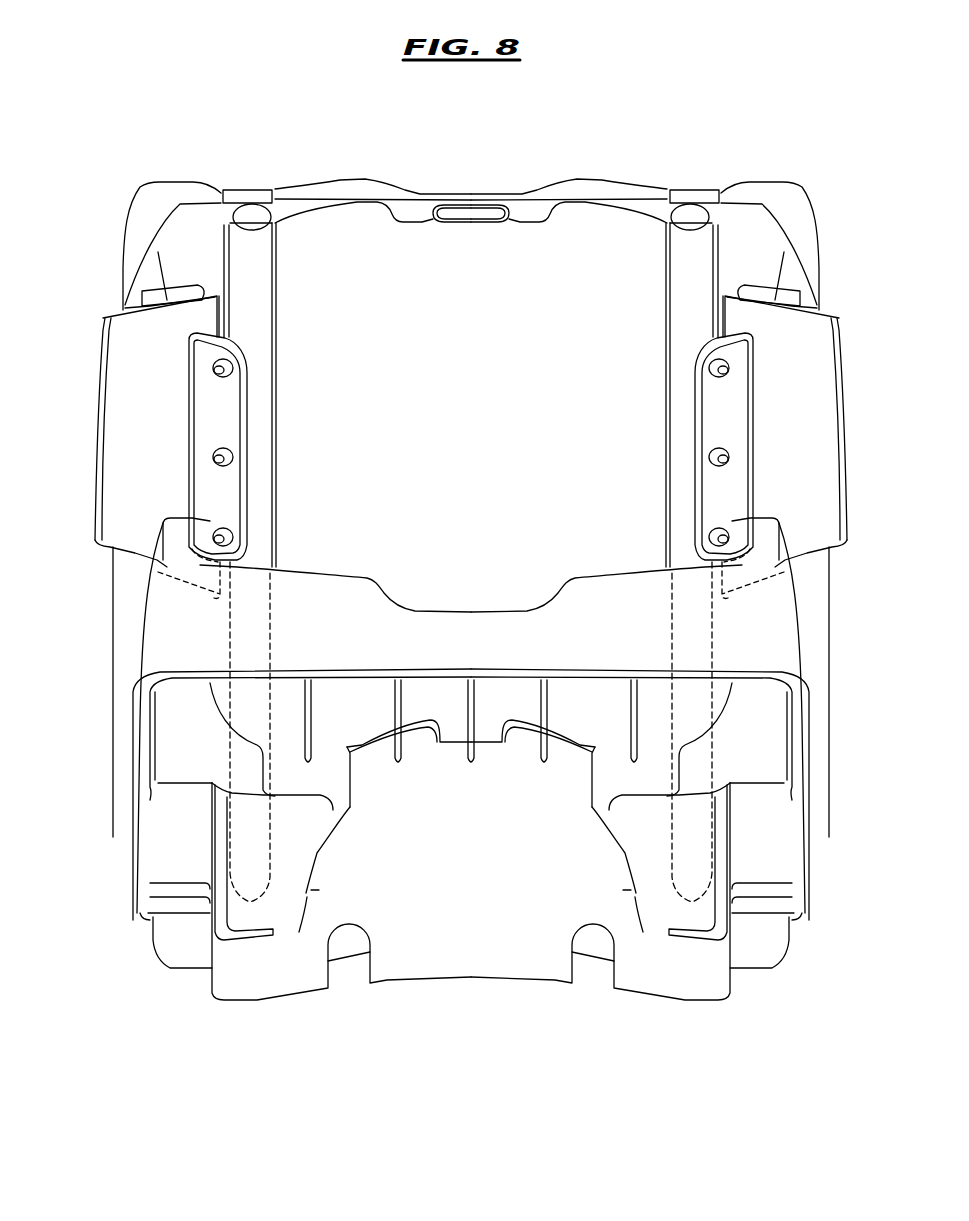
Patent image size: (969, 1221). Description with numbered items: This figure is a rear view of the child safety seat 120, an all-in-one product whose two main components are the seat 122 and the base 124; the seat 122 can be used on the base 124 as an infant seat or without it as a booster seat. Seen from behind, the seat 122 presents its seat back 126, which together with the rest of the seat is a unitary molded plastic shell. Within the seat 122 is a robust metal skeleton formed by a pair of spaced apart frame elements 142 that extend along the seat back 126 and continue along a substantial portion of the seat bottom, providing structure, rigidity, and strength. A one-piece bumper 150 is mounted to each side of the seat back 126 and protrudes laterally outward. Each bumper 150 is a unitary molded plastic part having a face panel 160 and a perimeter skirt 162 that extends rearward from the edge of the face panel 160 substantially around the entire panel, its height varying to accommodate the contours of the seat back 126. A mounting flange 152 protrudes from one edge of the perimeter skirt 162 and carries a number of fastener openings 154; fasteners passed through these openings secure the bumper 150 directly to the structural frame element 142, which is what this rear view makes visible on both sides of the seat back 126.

The child safety seat 120 is at (157, 129).
The seat 122 is at (105, 626).
The base 124 is at (430, 946).
The seat back 126 is at (789, 215).
The frame elements 142 is at (258, 402).
The bumper 150 is at (126, 442).
The mounting flange 152 is at (218, 420).
The fastener openings 154 is at (228, 360).
The face panel 160 is at (97, 400).
The perimeter skirt 162 is at (138, 487).